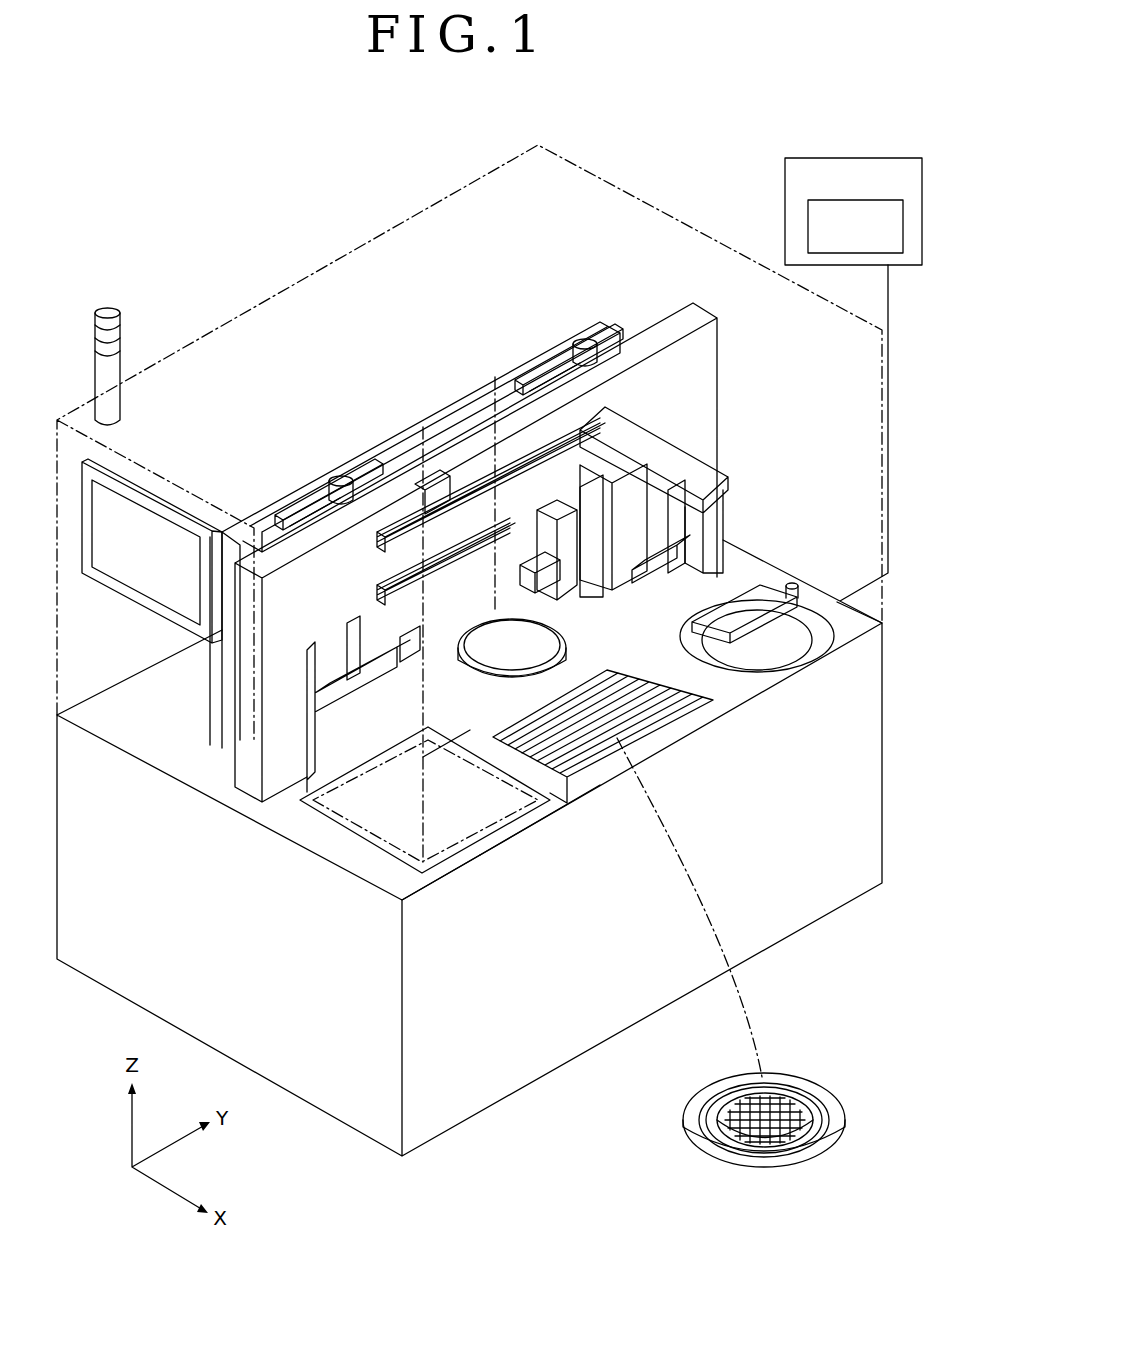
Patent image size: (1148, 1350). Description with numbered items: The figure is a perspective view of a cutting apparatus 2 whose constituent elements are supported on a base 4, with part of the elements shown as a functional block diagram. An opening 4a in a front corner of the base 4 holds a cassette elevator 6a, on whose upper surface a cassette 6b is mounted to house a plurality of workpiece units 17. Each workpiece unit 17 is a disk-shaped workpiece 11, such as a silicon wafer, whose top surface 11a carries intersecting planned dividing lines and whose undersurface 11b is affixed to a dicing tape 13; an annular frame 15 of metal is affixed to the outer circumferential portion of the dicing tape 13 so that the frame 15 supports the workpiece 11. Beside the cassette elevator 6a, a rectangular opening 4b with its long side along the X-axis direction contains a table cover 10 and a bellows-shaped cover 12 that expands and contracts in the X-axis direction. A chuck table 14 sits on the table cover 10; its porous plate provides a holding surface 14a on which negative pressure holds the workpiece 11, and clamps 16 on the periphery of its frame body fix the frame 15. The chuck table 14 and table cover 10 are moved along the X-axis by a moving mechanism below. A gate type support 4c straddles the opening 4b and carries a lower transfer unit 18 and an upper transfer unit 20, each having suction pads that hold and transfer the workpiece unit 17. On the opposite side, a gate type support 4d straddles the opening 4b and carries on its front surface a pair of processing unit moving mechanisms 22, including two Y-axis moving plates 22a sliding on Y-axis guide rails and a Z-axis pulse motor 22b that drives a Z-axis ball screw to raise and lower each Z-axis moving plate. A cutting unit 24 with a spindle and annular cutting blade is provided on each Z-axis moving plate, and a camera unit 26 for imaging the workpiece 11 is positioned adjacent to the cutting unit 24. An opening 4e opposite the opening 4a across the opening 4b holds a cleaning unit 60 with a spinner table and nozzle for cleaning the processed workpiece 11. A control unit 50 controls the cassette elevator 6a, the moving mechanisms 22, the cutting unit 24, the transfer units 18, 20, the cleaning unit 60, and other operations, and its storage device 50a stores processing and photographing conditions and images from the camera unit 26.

The cutting apparatus 2 is at (186, 312).
The base 4 is at (110, 690).
The opening 4a is at (470, 855).
The opening 4b is at (563, 800).
The support 4c is at (672, 330).
The support 4d is at (243, 527).
The opening 4e is at (848, 607).
The cassette elevator 6a is at (355, 810).
The cassette 6b is at (400, 800).
The table cover 10 is at (425, 762).
The workpiece 11 is at (787, 1088).
The top surface 11a is at (745, 1090).
The undersurface 11b is at (780, 1150).
The bellows-shaped cover 12 is at (632, 742).
The dicing tape 13 is at (826, 1108).
The chuck table 14 is at (497, 607).
The holding surface 14a is at (423, 530).
The annular frame 15 is at (697, 1118).
The clamps 16 is at (630, 690).
The workpiece unit 17 is at (707, 1155).
The lower transfer unit 18 is at (620, 498).
The upper transfer unit 20 is at (692, 450).
The processing unit moving mechanisms 22 is at (362, 472).
The Y-axis moving plates 22a is at (297, 512).
The Z-axis pulse motor 22b is at (335, 483).
The cutting unit 24 is at (433, 488).
The camera unit 26 is at (305, 752).
The control unit 50 is at (838, 158).
The storage device 50a is at (808, 227).
The cleaning unit 60 is at (842, 638).